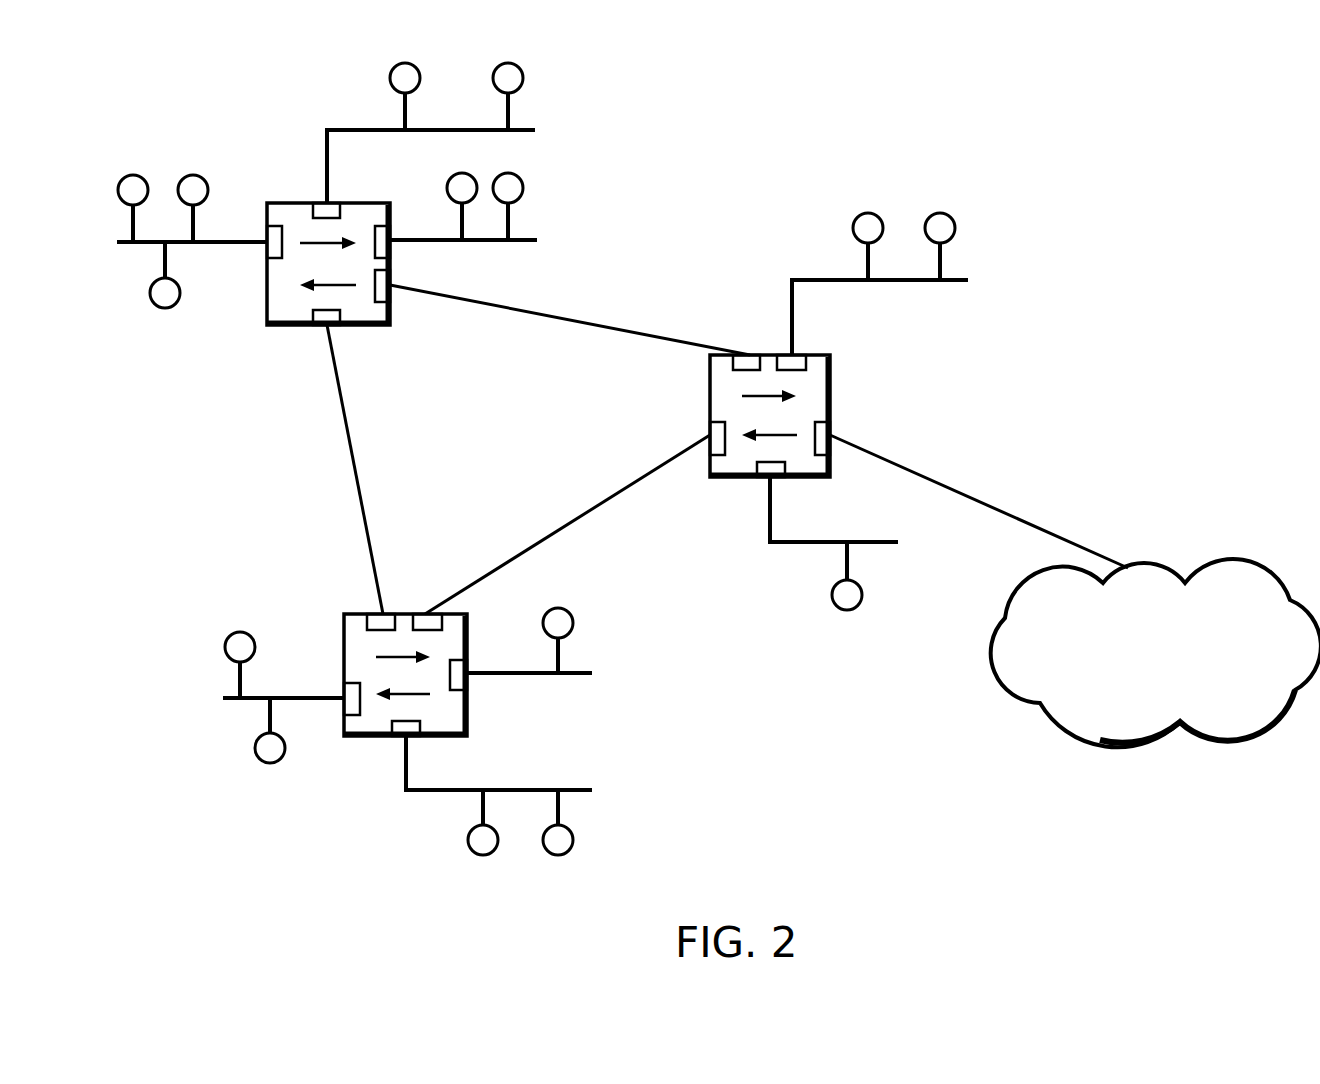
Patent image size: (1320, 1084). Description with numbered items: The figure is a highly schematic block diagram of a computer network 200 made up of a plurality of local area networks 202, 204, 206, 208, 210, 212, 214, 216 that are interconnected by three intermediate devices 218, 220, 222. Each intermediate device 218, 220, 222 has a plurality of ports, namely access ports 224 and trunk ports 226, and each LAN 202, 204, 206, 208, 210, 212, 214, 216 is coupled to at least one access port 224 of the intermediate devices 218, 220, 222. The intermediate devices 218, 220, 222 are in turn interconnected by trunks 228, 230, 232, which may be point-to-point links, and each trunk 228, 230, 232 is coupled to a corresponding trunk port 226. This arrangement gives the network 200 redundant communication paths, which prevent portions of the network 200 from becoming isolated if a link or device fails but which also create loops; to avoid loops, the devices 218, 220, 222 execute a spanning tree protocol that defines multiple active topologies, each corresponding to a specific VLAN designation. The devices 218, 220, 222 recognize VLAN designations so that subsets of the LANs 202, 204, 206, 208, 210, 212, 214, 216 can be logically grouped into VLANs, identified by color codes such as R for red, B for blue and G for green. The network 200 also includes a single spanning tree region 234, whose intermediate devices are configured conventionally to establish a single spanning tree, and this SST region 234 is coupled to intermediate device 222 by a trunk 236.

The computer network 200 is at (1068, 150).
The local area network 202 is at (528, 130).
The local area network 204 is at (528, 240).
The local area network 206 is at (152, 244).
The local area network 208 is at (255, 700).
The local area network 210 is at (580, 790).
The local area network 212 is at (580, 674).
The local area network 214 is at (885, 542).
The local area network 216 is at (958, 282).
The intermediate device 218 is at (290, 326).
The intermediate device 220 is at (344, 642).
The intermediate device 222 is at (735, 478).
The access port 224 is at (270, 227).
The trunk port 226 is at (350, 325).
The trunk 228 is at (350, 427).
The trunk 230 is at (578, 516).
The trunk 232 is at (575, 322).
The single spanning tree region 234 is at (1225, 575).
The trunk 236 is at (1008, 507).